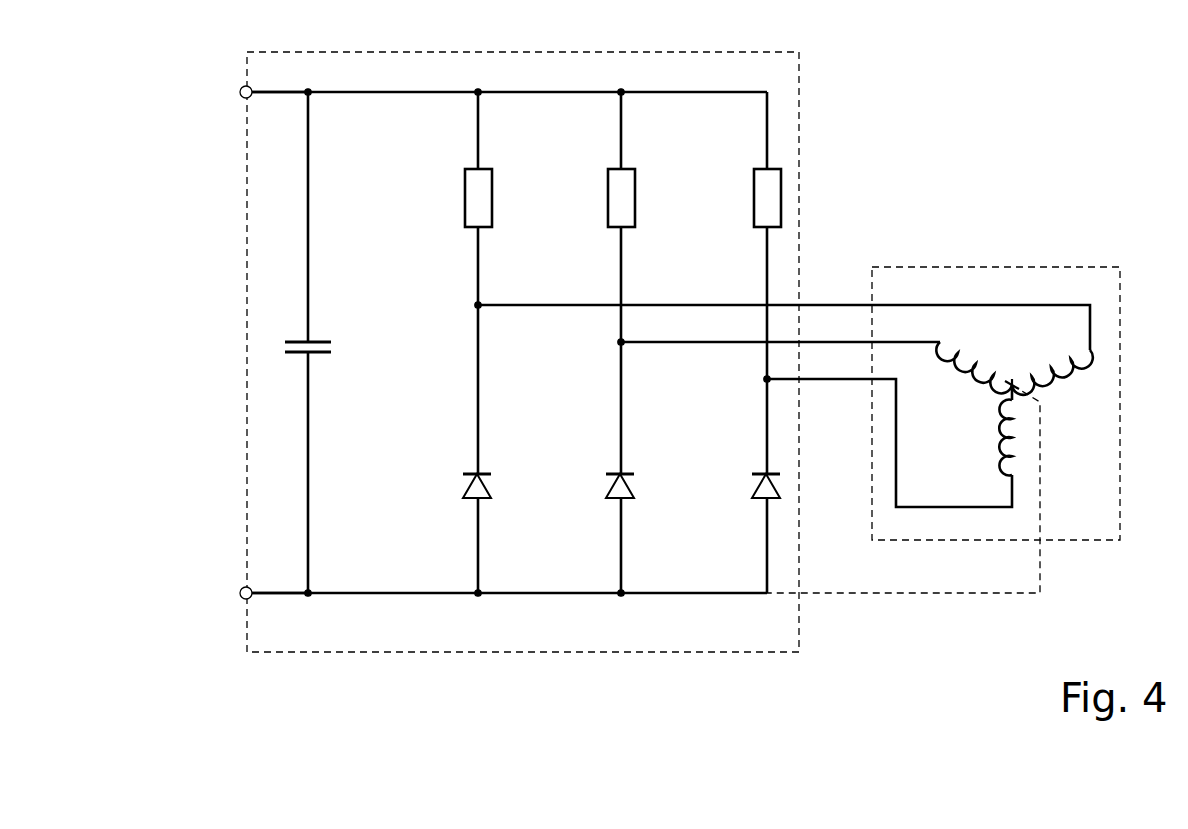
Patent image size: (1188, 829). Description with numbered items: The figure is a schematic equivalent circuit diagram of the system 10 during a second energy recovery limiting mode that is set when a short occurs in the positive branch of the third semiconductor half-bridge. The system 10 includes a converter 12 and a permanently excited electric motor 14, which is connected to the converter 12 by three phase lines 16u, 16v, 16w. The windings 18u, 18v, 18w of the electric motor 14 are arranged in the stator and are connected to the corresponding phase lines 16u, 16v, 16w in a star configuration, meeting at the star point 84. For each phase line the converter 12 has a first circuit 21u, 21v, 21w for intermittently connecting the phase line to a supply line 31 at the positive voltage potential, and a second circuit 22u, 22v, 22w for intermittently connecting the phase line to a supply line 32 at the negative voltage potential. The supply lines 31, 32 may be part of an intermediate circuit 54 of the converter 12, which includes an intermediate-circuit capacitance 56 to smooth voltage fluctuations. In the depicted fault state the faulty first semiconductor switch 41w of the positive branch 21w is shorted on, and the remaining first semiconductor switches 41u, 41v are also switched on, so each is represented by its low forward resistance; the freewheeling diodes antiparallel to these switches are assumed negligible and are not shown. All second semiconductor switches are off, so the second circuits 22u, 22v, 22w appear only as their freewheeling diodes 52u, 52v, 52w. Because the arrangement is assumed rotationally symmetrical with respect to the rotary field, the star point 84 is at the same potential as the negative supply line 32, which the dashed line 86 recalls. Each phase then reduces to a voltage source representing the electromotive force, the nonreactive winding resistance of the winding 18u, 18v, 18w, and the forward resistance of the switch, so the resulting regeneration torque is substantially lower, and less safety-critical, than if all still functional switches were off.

The system 10 is at (1073, 178).
The converter 12 is at (799, 116).
The electric motor 14 is at (1120, 400).
The phase line 16u is at (535, 304).
The phase line 16v is at (660, 345).
The phase line 16w is at (832, 382).
The winding 18u is at (1052, 361).
The winding 18v is at (974, 353).
The winding 18w is at (995, 430).
The first circuit 21u is at (439, 198).
The first circuit 21v is at (582, 217).
The first circuit 21w is at (727, 235).
The second circuit 22u is at (461, 449).
The second circuit 22v is at (597, 467).
The second circuit 22w is at (725, 486).
The supply line 31 is at (275, 98).
The supply line 32 is at (275, 588).
The first semiconductor switch 41u is at (455, 168).
The first semiconductor switch 41v is at (597, 197).
The first semiconductor switch 41w is at (742, 168).
The freewheeling diode 52u is at (447, 417).
The freewheeling diode 52v is at (636, 463).
The freewheeling diode 52w is at (752, 490).
The intermediate circuit 54 is at (328, 342).
The intermediate-circuit capacitance 56 is at (318, 342).
The star point 84 is at (1008, 387).
The dashed line 86 is at (968, 596).